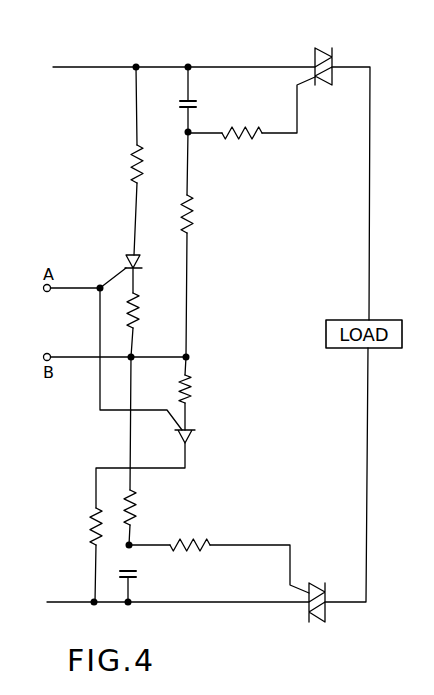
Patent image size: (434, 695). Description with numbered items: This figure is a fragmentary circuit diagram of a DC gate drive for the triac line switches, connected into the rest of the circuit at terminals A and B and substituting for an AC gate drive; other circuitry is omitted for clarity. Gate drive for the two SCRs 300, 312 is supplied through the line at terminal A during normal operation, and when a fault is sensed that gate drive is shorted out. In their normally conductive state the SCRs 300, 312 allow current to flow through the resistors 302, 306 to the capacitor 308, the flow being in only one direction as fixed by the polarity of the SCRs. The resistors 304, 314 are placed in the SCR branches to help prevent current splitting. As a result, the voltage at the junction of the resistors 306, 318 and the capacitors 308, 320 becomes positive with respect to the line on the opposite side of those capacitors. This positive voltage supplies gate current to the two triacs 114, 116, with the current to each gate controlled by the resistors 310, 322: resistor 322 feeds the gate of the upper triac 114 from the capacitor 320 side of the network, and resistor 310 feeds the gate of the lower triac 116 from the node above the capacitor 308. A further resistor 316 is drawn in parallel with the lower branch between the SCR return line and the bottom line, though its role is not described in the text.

The triac 114 is at (336, 40).
The triac 116 is at (316, 622).
The SCR 300 is at (142, 263).
The resistor 302 is at (128, 158).
The resistor 304 is at (144, 318).
The resistor 306 is at (140, 504).
The capacitor 308 is at (140, 573).
The resistor 310 is at (195, 542).
The SCR 312 is at (195, 437).
The resistor 314 is at (194, 392).
The resistor 316 is at (90, 531).
The resistor 318 is at (199, 222).
The capacitor 320 is at (200, 104).
The resistor 322 is at (243, 146).